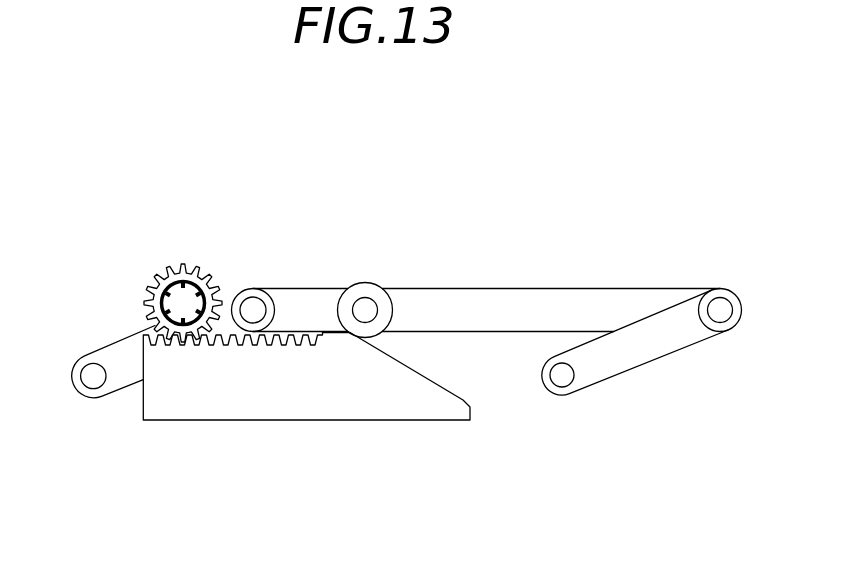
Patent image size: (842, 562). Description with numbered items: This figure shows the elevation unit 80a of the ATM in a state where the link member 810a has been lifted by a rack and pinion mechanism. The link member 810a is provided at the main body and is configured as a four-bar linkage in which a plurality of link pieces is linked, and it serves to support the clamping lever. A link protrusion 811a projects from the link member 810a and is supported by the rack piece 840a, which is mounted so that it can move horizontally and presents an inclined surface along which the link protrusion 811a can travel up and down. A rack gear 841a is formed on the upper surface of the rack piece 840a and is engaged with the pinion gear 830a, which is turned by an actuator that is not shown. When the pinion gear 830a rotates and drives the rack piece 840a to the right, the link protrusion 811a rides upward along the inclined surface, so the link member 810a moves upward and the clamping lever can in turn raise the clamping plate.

The elevation unit 80a is at (114, 267).
The link member 810a is at (542, 302).
The link protrusion 811a is at (364, 308).
The pinion gear 830a is at (185, 268).
The rack piece 840a is at (450, 408).
The rack gear 841a is at (225, 343).